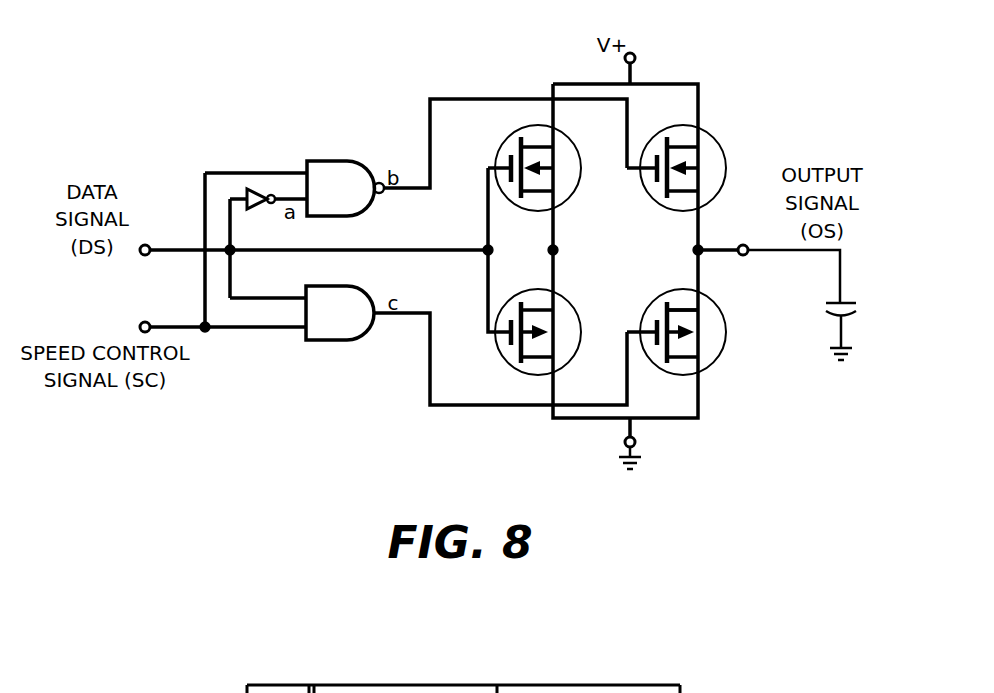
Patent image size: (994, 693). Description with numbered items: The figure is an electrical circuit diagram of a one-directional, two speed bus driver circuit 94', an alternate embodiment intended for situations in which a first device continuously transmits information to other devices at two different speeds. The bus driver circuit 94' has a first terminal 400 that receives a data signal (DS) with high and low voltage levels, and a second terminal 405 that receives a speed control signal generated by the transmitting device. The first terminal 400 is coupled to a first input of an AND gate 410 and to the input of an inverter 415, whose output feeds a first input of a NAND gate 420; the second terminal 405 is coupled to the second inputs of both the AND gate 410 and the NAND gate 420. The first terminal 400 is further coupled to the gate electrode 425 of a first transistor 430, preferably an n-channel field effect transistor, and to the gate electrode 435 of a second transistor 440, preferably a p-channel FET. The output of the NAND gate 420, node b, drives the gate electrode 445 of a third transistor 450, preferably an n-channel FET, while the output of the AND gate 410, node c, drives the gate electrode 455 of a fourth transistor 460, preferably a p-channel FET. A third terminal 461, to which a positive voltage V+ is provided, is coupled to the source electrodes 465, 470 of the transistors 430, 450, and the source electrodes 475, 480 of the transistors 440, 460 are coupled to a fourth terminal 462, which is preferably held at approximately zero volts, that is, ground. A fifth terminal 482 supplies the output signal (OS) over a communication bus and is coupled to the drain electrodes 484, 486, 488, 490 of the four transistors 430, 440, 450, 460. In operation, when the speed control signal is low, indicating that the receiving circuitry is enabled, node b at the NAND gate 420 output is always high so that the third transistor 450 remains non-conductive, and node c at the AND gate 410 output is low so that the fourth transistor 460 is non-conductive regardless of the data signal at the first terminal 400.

The bus driver circuit 94' is at (319, 299).
The first terminal 400 is at (150, 243).
The second terminal 405 is at (146, 320).
The AND gate 410 is at (335, 342).
The inverter 415 is at (258, 186).
The NAND gate 420 is at (320, 160).
The gate electrode 425 is at (500, 177).
The first transistor 430 is at (503, 137).
The gate electrode 435 is at (507, 323).
The second transistor 440 is at (508, 362).
The gate electrode 445 is at (647, 193).
The third transistor 450 is at (678, 123).
The gate electrode 455 is at (655, 327).
The fourth transistor 460 is at (658, 372).
The third terminal 461 is at (633, 52).
The fourth terminal 462 is at (622, 446).
The source electrode 465 is at (550, 135).
The source electrode 470 is at (697, 137).
The source electrode 475 is at (548, 367).
The source electrode 480 is at (700, 365).
The fifth terminal 482 is at (747, 257).
The drain electrode 484 is at (547, 203).
The drain electrode 486 is at (557, 302).
The drain electrode 488 is at (700, 202).
The drain electrode 490 is at (703, 305).